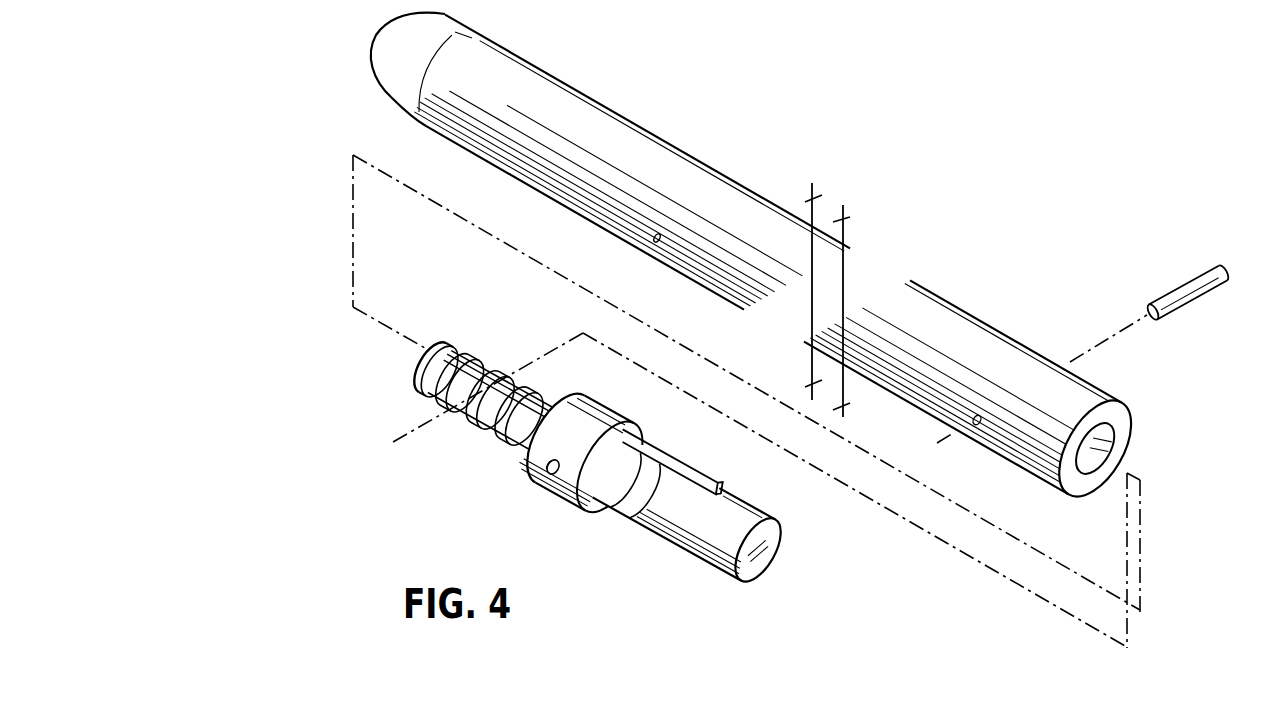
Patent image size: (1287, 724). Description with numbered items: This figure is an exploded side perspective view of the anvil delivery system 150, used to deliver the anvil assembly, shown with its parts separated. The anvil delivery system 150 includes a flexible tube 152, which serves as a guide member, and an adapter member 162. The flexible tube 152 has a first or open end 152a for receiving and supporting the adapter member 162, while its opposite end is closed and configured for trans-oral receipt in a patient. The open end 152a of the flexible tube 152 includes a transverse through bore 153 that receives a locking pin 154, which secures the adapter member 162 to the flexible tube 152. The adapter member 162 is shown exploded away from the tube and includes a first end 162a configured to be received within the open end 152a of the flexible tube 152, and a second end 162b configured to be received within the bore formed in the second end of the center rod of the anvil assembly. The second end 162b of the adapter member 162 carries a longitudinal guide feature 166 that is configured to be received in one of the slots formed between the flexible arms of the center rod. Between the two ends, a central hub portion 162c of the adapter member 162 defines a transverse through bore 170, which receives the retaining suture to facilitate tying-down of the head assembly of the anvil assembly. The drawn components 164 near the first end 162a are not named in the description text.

The anvil delivery system 150 is at (985, 213).
The flexible tube 152 is at (737, 183).
The open end 152a is at (1105, 395).
The transverse through bore 153 is at (977, 414).
The locking pin 154 is at (1223, 267).
The adapter member 162 is at (563, 503).
The first end 162a is at (427, 375).
The second end 162b is at (720, 527).
The central hub portion 162c is at (543, 447).
The sensors 164 is at (522, 372).
The longitudinal guide feature 166 is at (697, 482).
The transverse through bore 170 is at (545, 475).